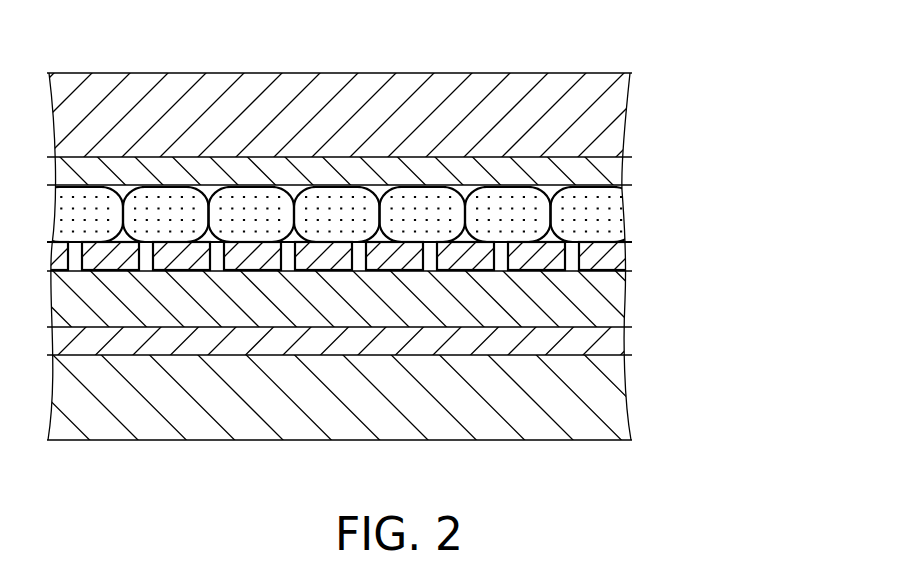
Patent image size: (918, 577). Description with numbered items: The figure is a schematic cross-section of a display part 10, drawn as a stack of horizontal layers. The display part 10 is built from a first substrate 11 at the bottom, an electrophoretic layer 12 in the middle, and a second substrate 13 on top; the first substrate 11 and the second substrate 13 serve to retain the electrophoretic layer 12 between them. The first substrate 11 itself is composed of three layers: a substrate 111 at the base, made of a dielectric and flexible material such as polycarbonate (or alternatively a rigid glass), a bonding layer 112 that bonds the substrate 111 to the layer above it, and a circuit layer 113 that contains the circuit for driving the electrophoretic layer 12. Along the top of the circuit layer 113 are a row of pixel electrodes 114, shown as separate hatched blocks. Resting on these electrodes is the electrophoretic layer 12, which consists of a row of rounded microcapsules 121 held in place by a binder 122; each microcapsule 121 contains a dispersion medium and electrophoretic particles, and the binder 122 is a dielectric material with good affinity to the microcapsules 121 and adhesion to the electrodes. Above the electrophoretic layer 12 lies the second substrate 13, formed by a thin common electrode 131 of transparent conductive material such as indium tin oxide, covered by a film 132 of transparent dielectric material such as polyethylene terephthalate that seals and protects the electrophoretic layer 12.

The display part 10 is at (421, 256).
The first substrate 11 is at (392, 343).
The electrophoretic layer 12 is at (411, 213).
The second substrate 13 is at (392, 129).
The substrate 111 is at (361, 397).
The bonding layer 112 is at (593, 340).
The circuit layer 113 is at (593, 305).
The pixel electrodes 114 is at (593, 255).
The microcapsules 121 is at (590, 223).
The binder 122 is at (558, 197).
The common electrode 131 is at (590, 177).
The film 132 is at (590, 127).